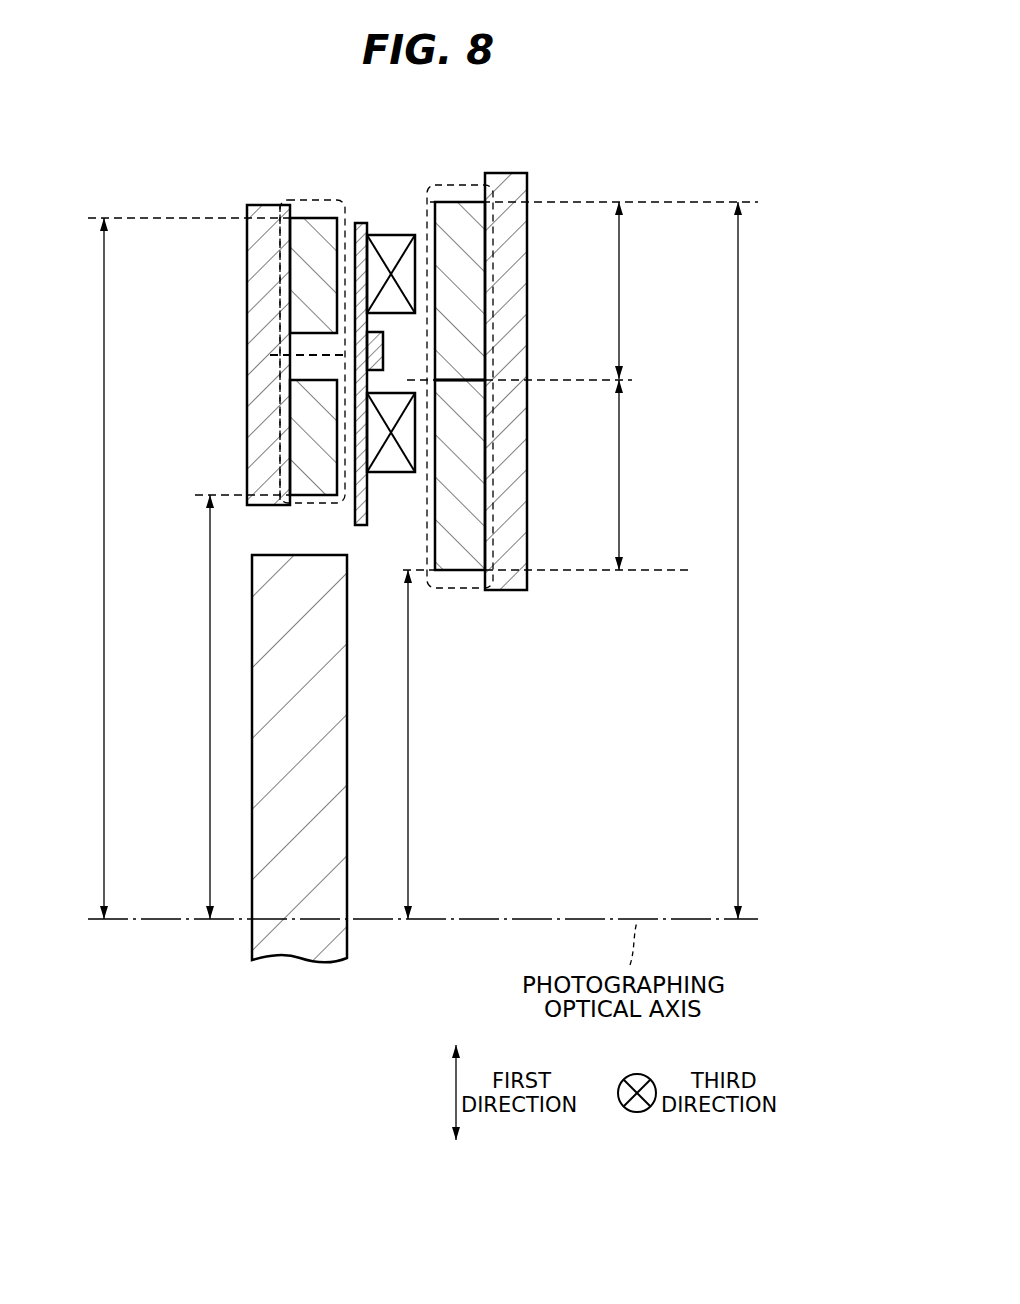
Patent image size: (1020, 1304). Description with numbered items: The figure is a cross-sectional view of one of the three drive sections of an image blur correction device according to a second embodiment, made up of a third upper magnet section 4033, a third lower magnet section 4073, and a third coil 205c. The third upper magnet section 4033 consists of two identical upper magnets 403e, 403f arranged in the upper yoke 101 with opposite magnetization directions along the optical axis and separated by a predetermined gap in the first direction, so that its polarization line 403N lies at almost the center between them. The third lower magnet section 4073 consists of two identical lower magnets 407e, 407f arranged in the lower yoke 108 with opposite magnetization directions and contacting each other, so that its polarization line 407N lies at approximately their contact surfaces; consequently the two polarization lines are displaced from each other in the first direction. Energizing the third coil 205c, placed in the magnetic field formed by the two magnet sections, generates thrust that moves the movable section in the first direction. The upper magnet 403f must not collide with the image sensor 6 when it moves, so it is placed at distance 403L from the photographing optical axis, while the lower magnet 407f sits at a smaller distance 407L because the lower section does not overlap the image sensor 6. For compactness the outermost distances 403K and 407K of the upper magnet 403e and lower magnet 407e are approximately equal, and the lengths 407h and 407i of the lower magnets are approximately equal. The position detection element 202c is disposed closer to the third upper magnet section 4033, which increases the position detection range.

The upper yoke 101 is at (253, 238).
The third upper magnet section 4033 is at (291, 199).
The upper magnet 403e is at (310, 230).
The upper magnet 403f is at (310, 487).
The polarization line 403N is at (295, 352).
The position detection element 202c is at (385, 355).
The third coil 205c is at (388, 243).
The third lower magnet section 4073 is at (427, 575).
The lower magnet 407e is at (470, 212).
The lower magnet 407f is at (462, 562).
The polarization line 407N is at (463, 392).
The lower yoke 108 is at (525, 272).
The image sensor 6 is at (336, 668).
The outermost distance from the photographing optical axis to the upper magnet 403K is at (109, 568).
The distance from the photographing optical axis to the upper magnet 403L is at (214, 707).
The distance from the photographing optical axis to the lower magnet 407L is at (412, 744).
The outermost distance from the photographing optical axis to the lower magnet 407K is at (743, 560).
The length of the lower magnet in the first direction 407h is at (621, 290).
The length of the lower magnet in the first direction 407i is at (621, 475).